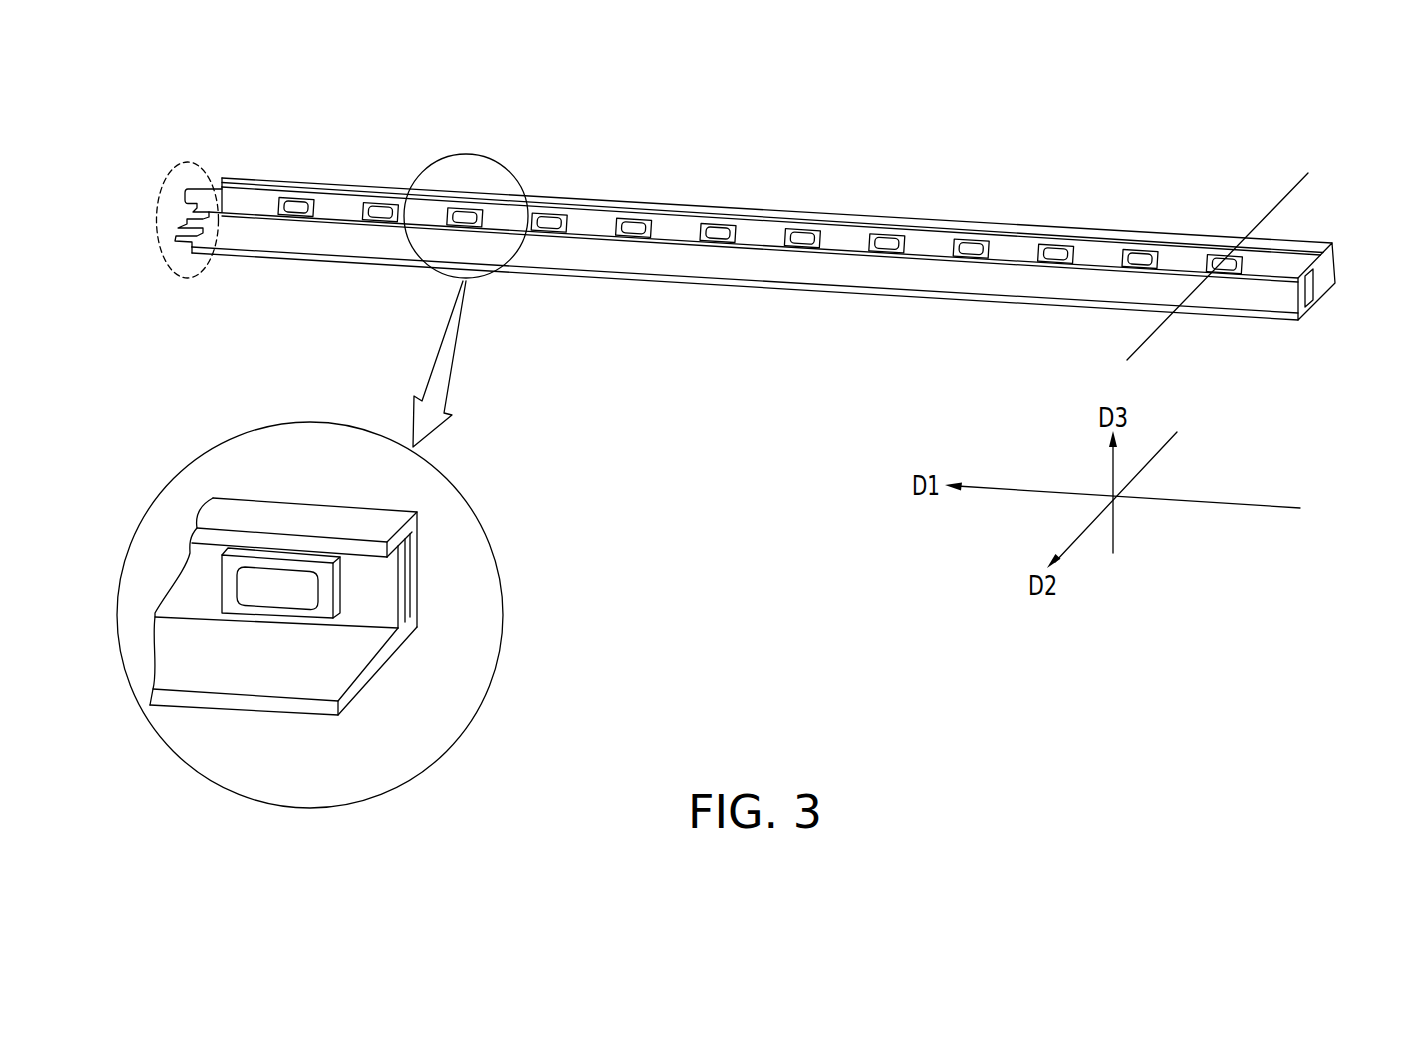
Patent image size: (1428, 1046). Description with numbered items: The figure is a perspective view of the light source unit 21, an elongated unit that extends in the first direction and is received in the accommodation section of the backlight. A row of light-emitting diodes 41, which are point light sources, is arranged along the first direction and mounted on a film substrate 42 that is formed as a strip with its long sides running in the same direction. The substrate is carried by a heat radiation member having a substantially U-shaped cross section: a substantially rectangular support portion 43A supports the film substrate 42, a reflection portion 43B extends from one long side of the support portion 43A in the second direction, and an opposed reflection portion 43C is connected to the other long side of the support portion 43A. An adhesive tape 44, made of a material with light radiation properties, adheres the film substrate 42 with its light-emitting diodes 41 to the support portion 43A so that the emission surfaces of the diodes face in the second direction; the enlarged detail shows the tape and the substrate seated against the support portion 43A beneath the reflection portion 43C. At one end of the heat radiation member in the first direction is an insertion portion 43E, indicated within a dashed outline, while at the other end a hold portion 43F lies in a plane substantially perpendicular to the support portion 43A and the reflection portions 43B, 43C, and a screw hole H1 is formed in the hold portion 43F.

The light source unit 21 is at (761, 381).
The light-emitting diode 41 is at (636, 220).
The film substrate 42 is at (690, 227).
The support portion 43A is at (413, 558).
The reflection portion 43B is at (593, 256).
The reflection portion 43C is at (347, 517).
The insertion portion 43E is at (188, 160).
The hold portion 43F is at (1325, 277).
The adhesive tape 44 is at (408, 573).
The screw hole H1 is at (1313, 294).